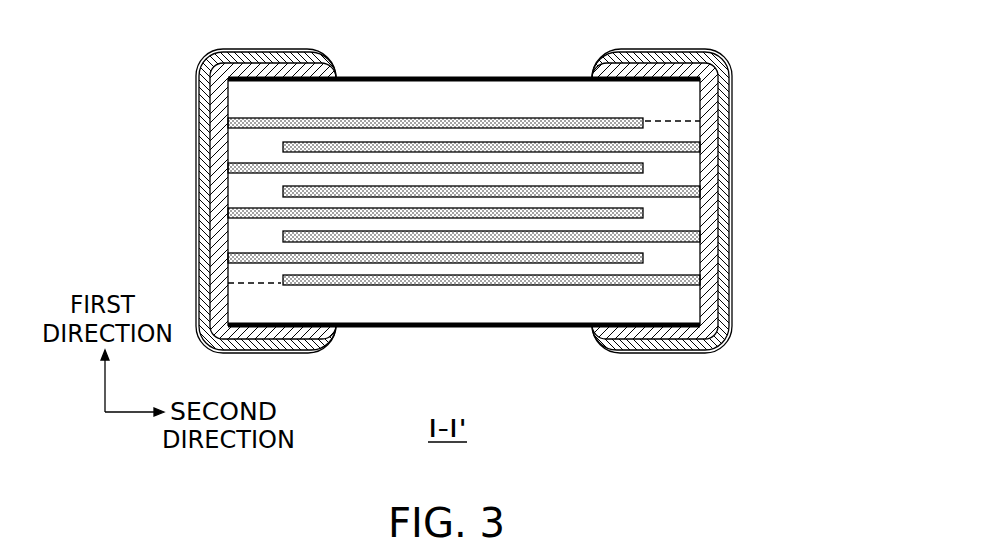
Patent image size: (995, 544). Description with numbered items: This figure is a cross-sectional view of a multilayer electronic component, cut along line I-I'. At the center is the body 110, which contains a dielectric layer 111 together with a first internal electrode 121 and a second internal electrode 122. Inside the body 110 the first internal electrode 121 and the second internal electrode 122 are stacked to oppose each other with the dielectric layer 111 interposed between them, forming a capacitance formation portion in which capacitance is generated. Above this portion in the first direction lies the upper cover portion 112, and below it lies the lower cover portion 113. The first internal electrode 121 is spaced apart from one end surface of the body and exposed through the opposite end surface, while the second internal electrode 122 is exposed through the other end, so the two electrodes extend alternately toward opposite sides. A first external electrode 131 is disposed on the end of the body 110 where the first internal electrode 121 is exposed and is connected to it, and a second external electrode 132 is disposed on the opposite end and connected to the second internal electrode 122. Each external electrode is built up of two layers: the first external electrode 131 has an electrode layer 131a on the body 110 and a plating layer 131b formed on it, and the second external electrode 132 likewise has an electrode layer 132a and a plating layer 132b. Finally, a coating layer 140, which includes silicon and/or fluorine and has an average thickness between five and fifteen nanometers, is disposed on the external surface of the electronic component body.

The body 110 is at (397, 78).
The dielectric layer 111 is at (343, 137).
The upper cover portion 112 is at (468, 95).
The lower cover portion 113 is at (378, 307).
The first internal electrode 121 is at (523, 118).
The second internal electrode 122 is at (578, 138).
The first external electrode 131 is at (190, 201).
The electrode layer 131a is at (199, 131).
The plating layer 131b is at (198, 157).
The second external electrode 132 is at (736, 201).
The electrode layer 132a is at (707, 110).
The plating layer 132b is at (728, 132).
The coating layer 140 is at (293, 49).